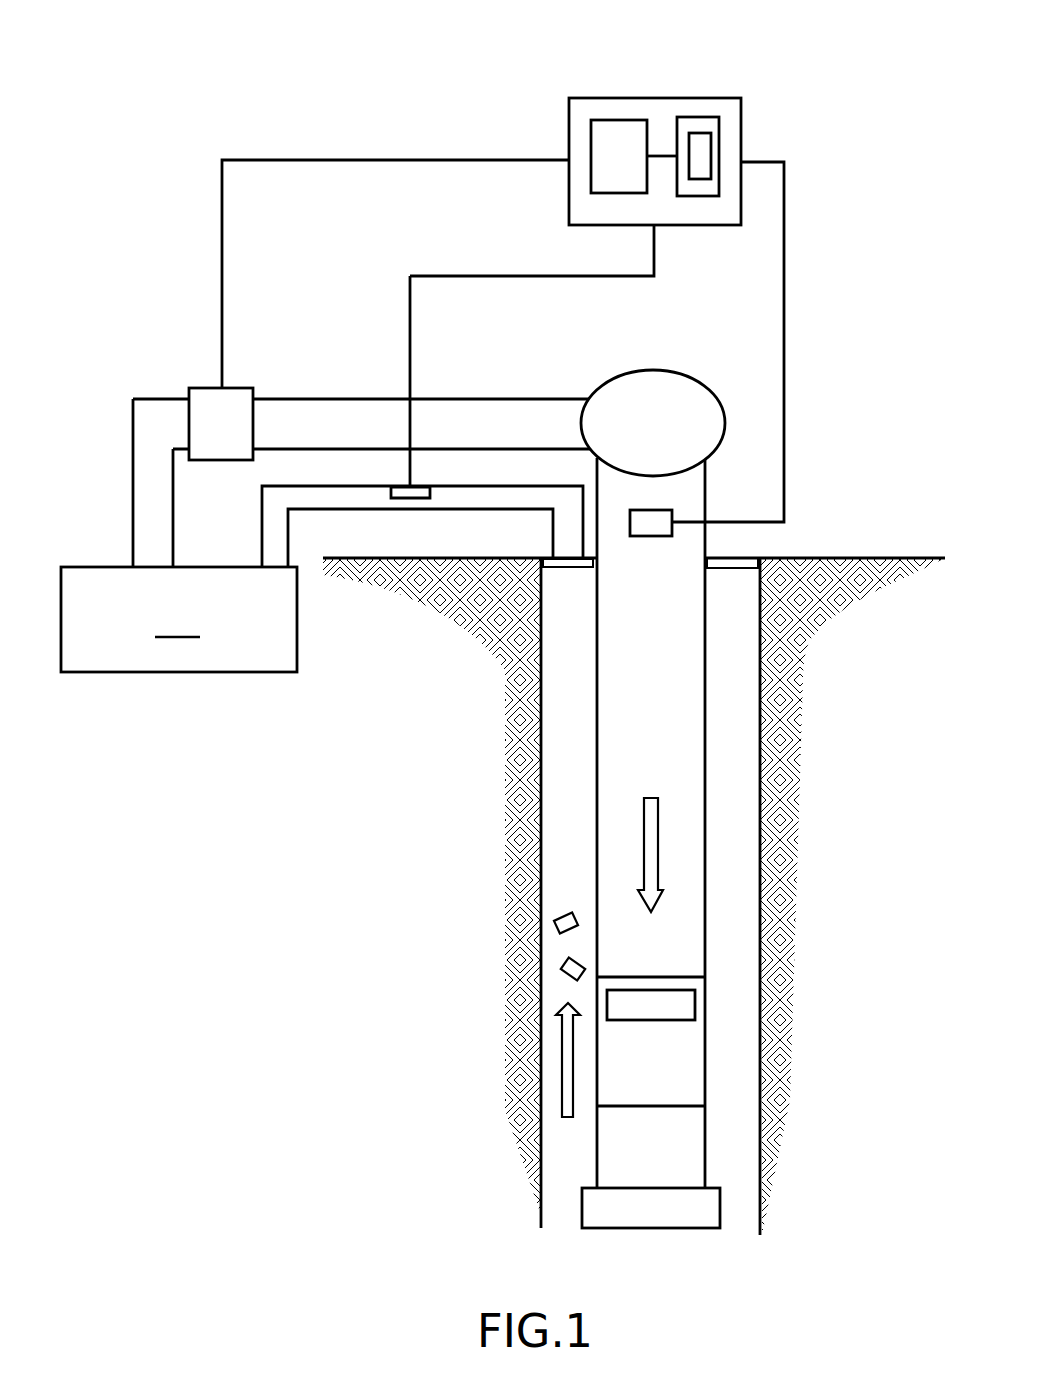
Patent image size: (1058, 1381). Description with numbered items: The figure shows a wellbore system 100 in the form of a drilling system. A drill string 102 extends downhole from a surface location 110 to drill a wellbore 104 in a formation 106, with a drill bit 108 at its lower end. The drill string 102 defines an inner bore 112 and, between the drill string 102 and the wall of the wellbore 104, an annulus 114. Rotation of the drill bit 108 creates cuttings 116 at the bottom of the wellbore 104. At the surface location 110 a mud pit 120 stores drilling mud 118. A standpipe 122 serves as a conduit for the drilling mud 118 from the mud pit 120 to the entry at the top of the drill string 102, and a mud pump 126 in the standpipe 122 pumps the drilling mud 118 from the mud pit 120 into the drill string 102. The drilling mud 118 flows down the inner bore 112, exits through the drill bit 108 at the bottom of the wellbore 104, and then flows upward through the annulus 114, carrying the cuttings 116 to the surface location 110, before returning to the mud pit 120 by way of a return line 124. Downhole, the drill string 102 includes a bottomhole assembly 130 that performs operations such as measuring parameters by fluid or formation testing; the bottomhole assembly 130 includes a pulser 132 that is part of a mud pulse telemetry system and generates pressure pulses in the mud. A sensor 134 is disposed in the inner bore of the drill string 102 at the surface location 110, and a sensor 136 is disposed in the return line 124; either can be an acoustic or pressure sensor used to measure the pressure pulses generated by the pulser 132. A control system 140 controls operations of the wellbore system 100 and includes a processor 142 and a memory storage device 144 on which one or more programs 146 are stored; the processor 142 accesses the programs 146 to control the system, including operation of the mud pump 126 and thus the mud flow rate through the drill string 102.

The wellbore system 100 is at (204, 96).
The drill string 102 is at (707, 678).
The wellbore 104 is at (762, 735).
The formation 106 is at (897, 777).
The drill bit 108 is at (582, 1203).
The surface location 110 is at (822, 558).
The inner bore 112 is at (620, 723).
The annulus 114 is at (560, 818).
The cuttings 116 is at (553, 922).
The drilling mud 118 is at (658, 847).
The mud pit 120 is at (147, 673).
The standpipe 122 is at (293, 399).
The return line 124 is at (470, 509).
The mud pump 126 is at (201, 388).
The bottomhole assembly 130 is at (707, 1050).
The pulser 132 is at (697, 1003).
The sensor 134 is at (653, 510).
The sensor 136 is at (410, 498).
The control system 140 is at (788, 77).
The processor 142 is at (617, 120).
The memory storage device 144 is at (693, 117).
The programs 146 is at (711, 142).